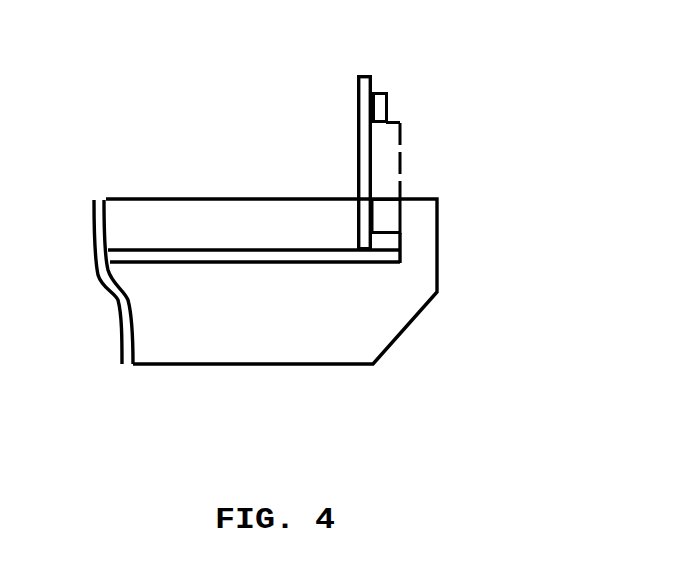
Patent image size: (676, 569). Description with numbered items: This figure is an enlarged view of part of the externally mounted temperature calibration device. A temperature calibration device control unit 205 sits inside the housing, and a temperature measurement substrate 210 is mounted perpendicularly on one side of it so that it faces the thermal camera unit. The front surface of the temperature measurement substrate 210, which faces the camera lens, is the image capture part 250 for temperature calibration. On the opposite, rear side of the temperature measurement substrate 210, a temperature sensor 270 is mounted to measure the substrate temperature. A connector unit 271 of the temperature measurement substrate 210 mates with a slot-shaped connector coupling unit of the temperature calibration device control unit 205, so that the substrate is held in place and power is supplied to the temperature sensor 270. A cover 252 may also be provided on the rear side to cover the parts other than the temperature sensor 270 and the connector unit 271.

The temperature calibration device control unit 205 is at (258, 258).
The temperature measurement substrate 210 is at (348, 120).
The image capture part for temperature calibration 250 is at (357, 161).
The cover 252 is at (401, 153).
The temperature sensor 270 is at (383, 92).
The connector unit 271 is at (393, 220).